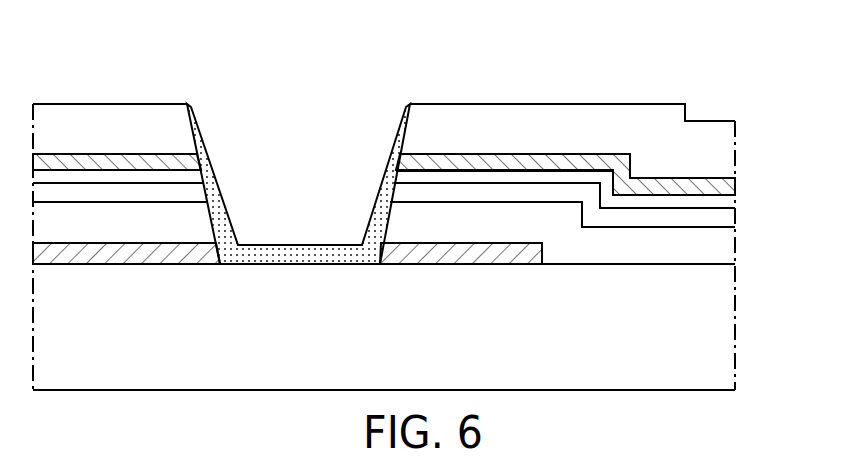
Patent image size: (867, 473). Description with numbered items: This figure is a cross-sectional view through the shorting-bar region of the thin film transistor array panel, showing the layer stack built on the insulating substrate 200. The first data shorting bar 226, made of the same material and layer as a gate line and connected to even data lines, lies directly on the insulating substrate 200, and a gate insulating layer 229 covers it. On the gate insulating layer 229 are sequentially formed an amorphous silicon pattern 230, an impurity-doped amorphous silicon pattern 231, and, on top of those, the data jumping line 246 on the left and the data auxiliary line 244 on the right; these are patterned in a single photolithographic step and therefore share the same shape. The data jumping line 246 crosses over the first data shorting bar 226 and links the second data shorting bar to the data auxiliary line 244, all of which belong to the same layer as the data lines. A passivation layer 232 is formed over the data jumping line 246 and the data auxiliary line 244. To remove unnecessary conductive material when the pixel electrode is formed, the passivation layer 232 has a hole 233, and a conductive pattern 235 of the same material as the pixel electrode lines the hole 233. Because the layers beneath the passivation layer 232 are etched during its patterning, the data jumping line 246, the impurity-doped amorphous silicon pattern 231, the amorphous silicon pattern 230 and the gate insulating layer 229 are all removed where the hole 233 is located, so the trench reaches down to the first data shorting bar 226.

The insulating substrate 200 is at (423, 361).
The first data shorting bar 226 is at (513, 262).
The gate insulating layer 229 is at (727, 247).
The amorphous silicon pattern 230 is at (542, 196).
The impurity-doped amorphous silicon pattern 231 is at (513, 175).
The passivation layer 232 is at (467, 112).
The hole 233 is at (299, 188).
The conductive pattern 235 is at (212, 178).
The data auxiliary line 244 is at (707, 187).
The data jumping line 246 is at (93, 153).